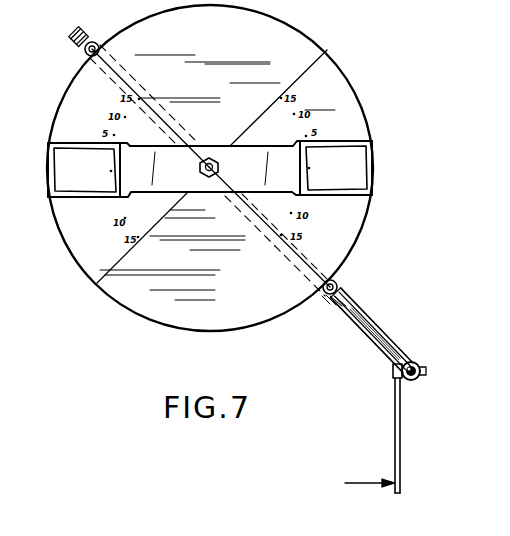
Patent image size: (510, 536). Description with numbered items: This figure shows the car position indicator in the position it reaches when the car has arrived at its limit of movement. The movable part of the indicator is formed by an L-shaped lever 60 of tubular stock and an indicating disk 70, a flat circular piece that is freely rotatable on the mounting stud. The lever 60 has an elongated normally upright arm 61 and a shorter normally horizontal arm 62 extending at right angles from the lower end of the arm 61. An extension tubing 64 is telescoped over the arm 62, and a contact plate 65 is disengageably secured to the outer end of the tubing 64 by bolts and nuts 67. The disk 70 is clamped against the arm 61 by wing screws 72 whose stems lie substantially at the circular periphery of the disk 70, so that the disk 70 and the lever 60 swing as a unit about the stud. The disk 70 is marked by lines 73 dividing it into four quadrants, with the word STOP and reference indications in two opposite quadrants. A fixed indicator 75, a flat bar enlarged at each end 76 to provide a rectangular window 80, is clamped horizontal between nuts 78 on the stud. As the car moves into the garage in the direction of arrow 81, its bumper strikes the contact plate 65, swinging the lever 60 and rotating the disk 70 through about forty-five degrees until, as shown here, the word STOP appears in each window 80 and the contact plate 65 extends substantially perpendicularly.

The L-shaped lever 60 is at (370, 312).
The upright arm 61 is at (392, 343).
The horizontal arm 62 is at (413, 383).
The extension tubing 64 is at (418, 365).
The contact plate 65 is at (395, 417).
The bolts and nuts 67 is at (393, 377).
The indicating disk 70 is at (322, 92).
The wing screws 72 is at (97, 41).
The quadrant lines 73 is at (133, 88).
The fixed indicator 75 is at (139, 192).
The enlarged end 76 is at (347, 138).
The nut 78 is at (217, 163).
The window 80 is at (360, 182).
The arrow 81 is at (362, 482).